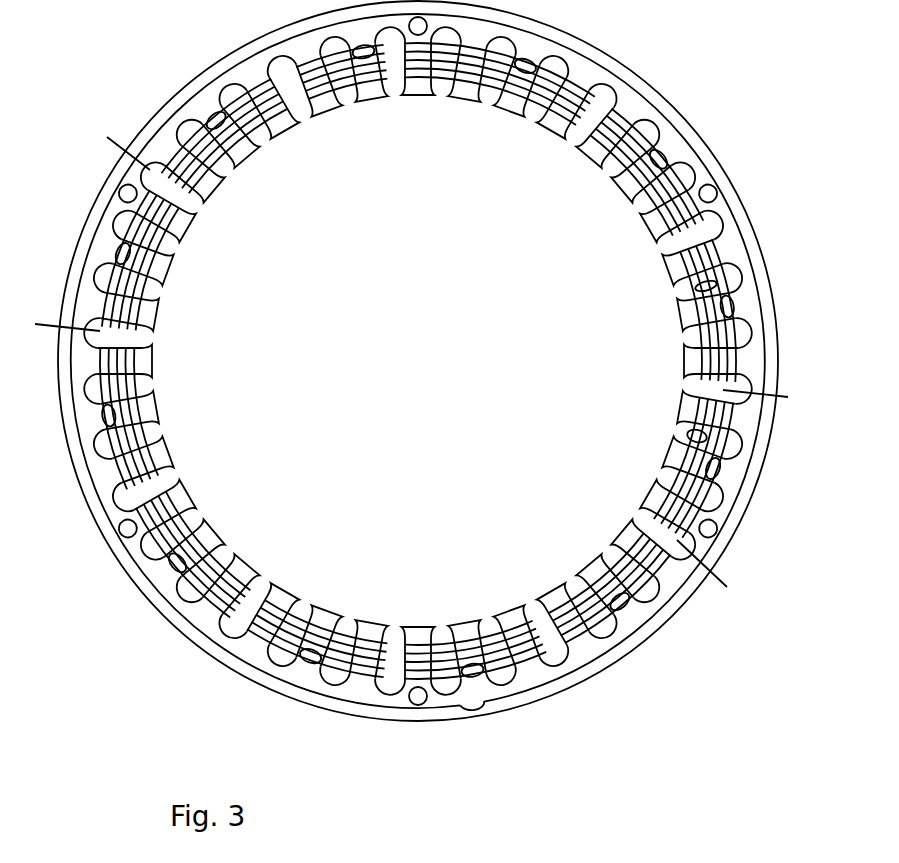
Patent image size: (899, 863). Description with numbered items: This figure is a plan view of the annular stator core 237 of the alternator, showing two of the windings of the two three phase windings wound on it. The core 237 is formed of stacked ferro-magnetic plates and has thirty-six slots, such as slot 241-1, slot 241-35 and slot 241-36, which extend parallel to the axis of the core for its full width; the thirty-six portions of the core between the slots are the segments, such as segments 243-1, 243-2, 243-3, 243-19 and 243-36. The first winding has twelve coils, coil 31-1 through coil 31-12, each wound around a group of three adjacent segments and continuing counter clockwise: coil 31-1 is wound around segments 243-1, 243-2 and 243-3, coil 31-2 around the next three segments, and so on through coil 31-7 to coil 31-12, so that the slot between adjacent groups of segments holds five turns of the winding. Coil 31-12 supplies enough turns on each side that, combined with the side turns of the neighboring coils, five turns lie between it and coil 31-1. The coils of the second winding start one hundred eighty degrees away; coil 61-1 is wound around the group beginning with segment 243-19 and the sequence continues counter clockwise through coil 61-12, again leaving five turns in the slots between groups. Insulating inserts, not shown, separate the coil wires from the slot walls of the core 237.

The stator core 237 is at (644, 644).
The slot 241-1 is at (152, 340).
The slot 241-35 is at (172, 258).
The slot 241-36 is at (160, 291).
The segment 243-1 is at (158, 368).
The segment 243-2 is at (158, 410).
The segment 243-3 is at (170, 447).
The segment 243-19 is at (682, 362).
The segment 243-36 is at (162, 314).
The coil 61-1 is at (714, 283).
The coil 61-12 is at (707, 438).
The coil 31-1 is at (103, 411).
The coil 31-2 is at (170, 563).
The coil 31-7 is at (725, 307).
The coil 31-12 is at (121, 248).